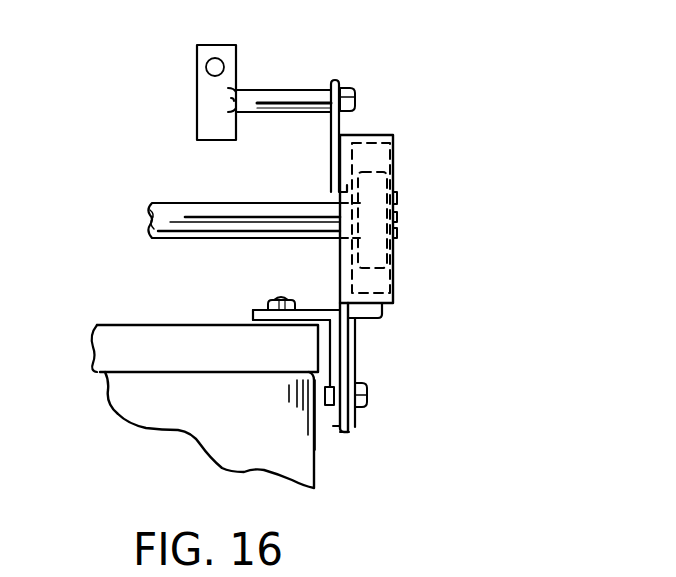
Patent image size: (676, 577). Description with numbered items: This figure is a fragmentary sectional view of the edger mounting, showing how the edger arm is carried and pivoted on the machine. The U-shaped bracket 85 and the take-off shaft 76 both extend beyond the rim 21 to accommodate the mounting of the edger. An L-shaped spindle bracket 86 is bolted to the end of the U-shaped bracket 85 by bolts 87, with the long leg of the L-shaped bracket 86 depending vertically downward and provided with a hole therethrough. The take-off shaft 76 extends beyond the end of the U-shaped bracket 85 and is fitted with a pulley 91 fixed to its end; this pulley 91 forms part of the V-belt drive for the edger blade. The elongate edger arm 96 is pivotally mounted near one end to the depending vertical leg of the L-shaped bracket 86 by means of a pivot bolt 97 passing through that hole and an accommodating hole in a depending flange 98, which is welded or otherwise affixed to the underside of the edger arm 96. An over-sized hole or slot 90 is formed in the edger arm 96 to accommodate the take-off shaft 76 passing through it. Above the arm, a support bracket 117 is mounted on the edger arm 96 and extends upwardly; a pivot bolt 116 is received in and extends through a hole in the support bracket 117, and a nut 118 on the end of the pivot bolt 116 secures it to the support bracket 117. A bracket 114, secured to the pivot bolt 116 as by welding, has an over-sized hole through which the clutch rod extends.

The rim 21 is at (324, 475).
The take-off shaft 76 is at (183, 203).
The U-shaped bracket 85 is at (160, 325).
The L-shaped spindle bracket 86 is at (341, 433).
The bolts 87 is at (268, 300).
The over-sized hole or slot 90 is at (338, 201).
The pulley 91 is at (395, 181).
The edger arm 96 is at (395, 298).
The pivot bolt 97 is at (368, 398).
The depending flange 98 is at (358, 342).
The bracket 114 is at (197, 60).
The pivot bolt 116 is at (268, 89).
The support bracket 117 is at (345, 122).
The nut 118 is at (357, 91).